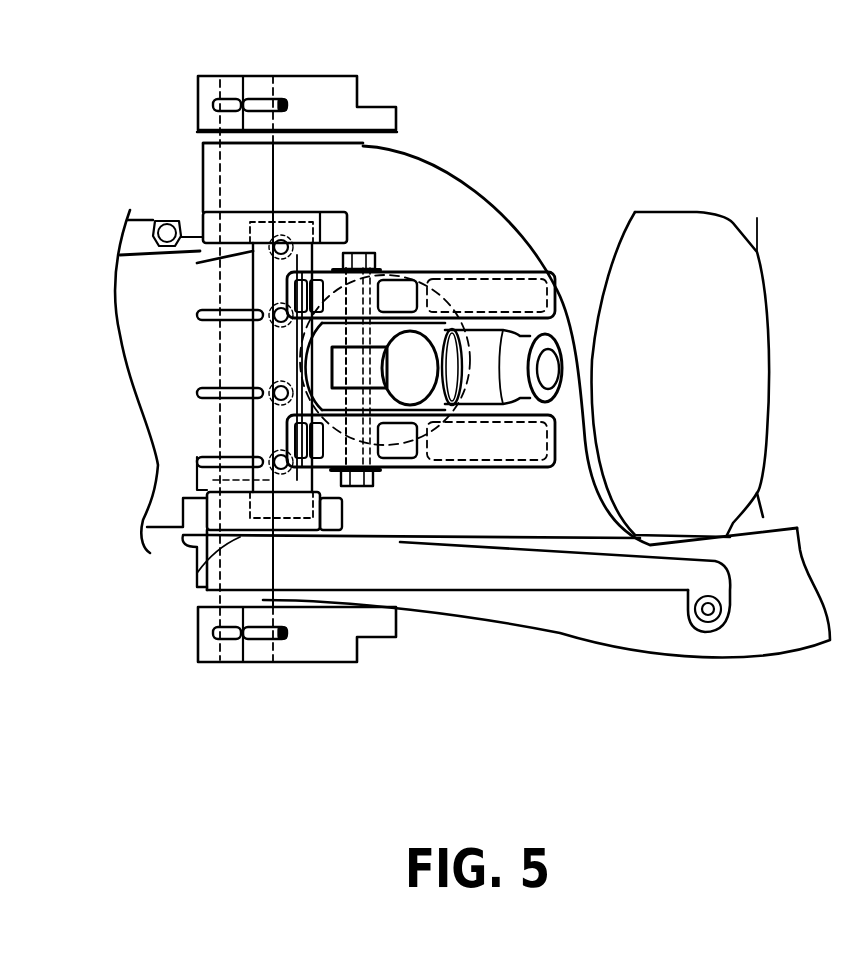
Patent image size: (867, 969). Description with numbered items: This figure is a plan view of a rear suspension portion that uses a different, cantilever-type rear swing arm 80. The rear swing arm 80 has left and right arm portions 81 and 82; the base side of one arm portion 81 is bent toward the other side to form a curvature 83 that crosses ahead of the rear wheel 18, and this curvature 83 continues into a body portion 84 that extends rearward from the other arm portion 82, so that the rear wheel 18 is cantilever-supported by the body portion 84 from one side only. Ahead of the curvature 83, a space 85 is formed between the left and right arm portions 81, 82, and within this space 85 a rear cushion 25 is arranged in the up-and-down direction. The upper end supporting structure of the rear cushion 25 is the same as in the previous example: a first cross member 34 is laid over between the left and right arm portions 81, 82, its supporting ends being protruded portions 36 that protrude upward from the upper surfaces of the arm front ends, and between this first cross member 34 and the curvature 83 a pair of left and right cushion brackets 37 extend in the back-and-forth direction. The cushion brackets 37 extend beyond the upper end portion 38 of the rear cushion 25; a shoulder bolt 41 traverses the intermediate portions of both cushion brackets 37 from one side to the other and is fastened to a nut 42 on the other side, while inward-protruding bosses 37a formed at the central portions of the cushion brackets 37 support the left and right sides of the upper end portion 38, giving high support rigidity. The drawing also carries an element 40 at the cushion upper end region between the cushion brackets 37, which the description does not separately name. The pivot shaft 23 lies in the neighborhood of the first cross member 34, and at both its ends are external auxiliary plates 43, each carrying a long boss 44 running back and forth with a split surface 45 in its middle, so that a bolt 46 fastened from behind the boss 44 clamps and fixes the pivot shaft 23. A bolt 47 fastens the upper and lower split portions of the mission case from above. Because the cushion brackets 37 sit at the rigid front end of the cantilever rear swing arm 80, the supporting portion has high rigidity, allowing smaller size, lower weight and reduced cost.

The rear wheel 18 is at (672, 218).
The pivot shaft 23 is at (218, 640).
The rear cushion 25 is at (305, 364).
The first cross member 34 is at (300, 358).
The protruded portion 36 is at (235, 212).
The cushion bracket 37 is at (425, 273).
The boss 37a is at (327, 308).
The upper end portion 38 is at (330, 437).
The cylinder 40 is at (540, 368).
The shoulder bolt 41 is at (355, 482).
The nut 42 is at (365, 254).
The external auxiliary plate 43 is at (205, 92).
The boss 44 is at (260, 102).
The split surface 45 is at (243, 75).
The bolt 46 is at (287, 107).
The bolt 47 is at (268, 305).
The rear swing arm 80 is at (552, 171).
The arm portion 81 is at (213, 133).
The arm portion 82 is at (197, 573).
The curvature 83 is at (493, 196).
The body portion 84 is at (818, 645).
The space 85 is at (305, 360).